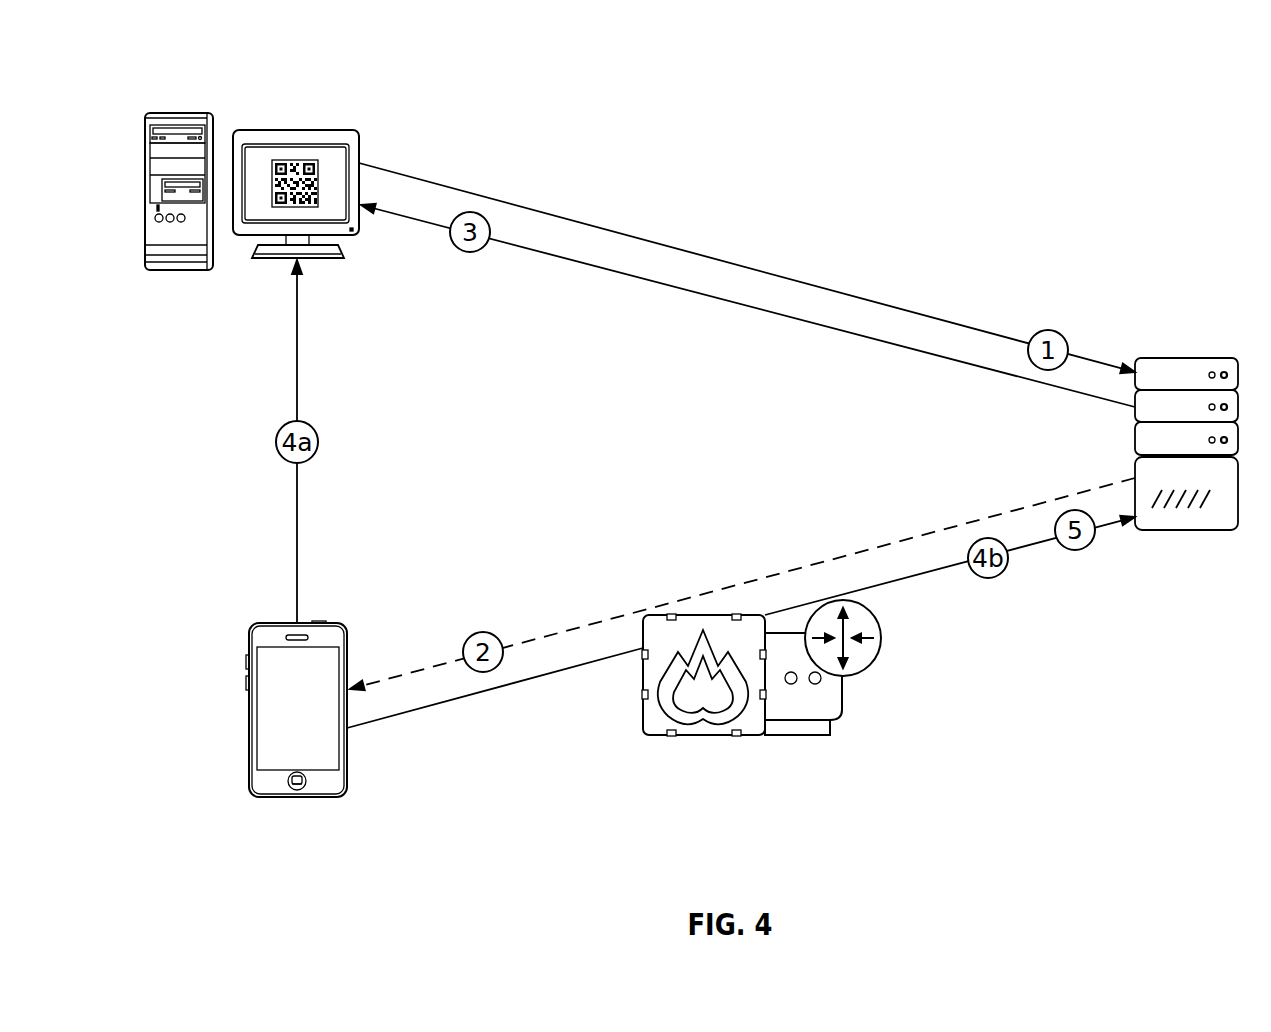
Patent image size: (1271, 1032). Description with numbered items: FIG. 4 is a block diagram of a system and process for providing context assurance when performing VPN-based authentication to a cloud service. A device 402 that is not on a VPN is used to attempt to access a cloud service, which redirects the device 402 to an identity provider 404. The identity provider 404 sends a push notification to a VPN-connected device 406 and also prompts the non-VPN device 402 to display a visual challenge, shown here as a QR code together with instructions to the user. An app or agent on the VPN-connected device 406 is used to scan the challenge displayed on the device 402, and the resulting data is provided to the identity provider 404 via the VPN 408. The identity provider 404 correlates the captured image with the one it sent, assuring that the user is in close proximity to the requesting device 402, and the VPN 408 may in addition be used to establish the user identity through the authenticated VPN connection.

The device not on a VPN 402 is at (297, 130).
The identity provider 404 is at (1186, 357).
The VPN-connected device 406 is at (248, 710).
The VPN 408 is at (843, 700).